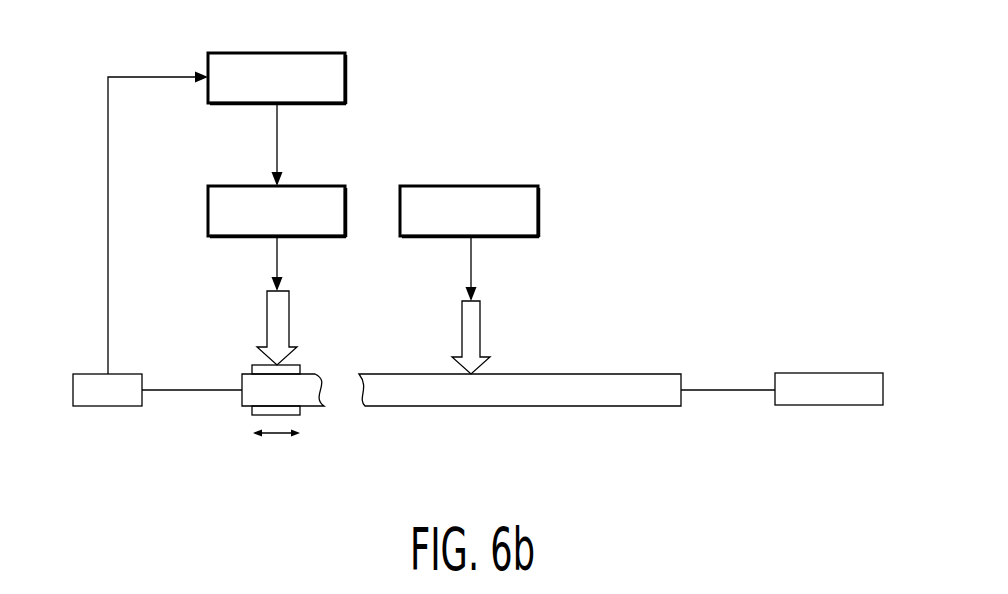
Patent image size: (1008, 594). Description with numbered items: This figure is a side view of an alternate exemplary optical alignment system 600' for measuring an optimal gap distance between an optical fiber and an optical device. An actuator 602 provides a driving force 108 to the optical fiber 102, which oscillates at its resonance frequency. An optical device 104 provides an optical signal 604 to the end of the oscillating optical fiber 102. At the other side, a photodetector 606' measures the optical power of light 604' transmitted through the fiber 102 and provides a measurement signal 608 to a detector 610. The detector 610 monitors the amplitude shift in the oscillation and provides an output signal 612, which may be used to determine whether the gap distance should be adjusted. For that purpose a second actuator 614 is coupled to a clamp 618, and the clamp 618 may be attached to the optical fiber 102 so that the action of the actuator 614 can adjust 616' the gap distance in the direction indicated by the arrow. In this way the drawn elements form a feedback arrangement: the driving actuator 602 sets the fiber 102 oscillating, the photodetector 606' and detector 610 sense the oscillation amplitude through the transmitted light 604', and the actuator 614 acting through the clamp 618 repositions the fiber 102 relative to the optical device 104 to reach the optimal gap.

The optical alignment system 600' is at (699, 47).
The detector 610 is at (346, 75).
The measurement signal 608 is at (108, 193).
The output signal 612 is at (278, 135).
The actuator 614 is at (208, 205).
The actuator 602 is at (539, 210).
The gap distance adjustment 616' is at (322, 300).
The light transmitted through the fiber 604' is at (192, 356).
The photodetector 606' is at (107, 420).
The clamp 618 is at (301, 370).
The driving force 108 is at (481, 316).
The optical fiber 102 is at (432, 407).
The optical signal 604 is at (728, 424).
The optical device 104 is at (844, 372).